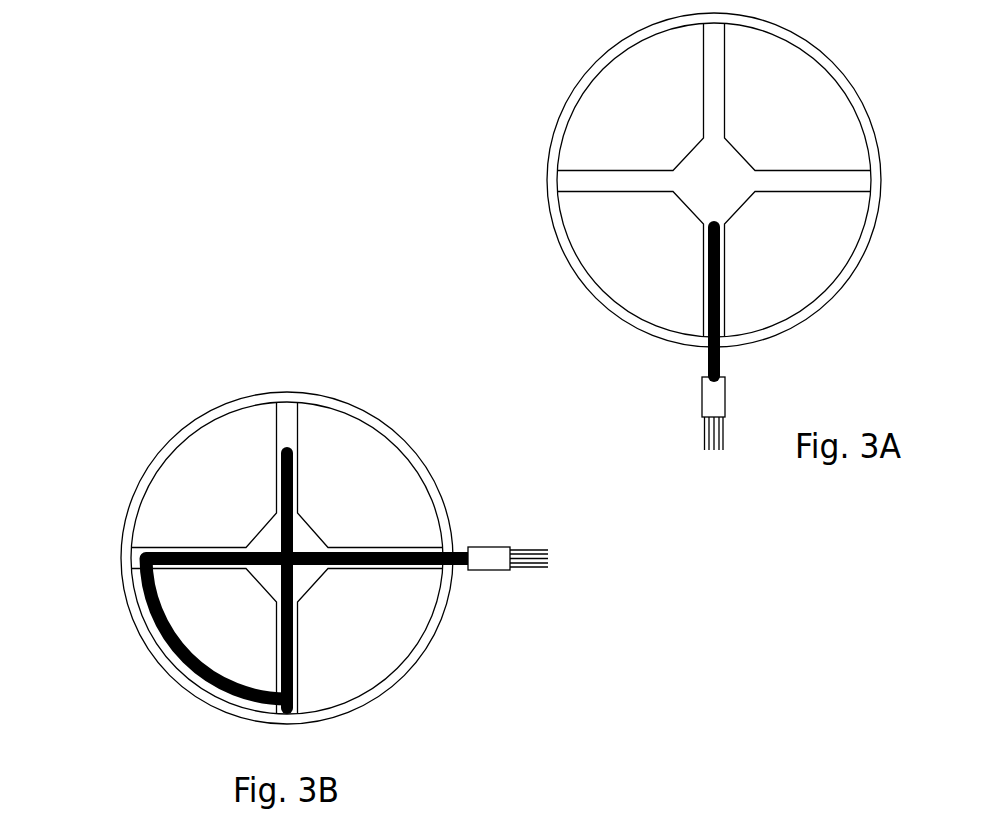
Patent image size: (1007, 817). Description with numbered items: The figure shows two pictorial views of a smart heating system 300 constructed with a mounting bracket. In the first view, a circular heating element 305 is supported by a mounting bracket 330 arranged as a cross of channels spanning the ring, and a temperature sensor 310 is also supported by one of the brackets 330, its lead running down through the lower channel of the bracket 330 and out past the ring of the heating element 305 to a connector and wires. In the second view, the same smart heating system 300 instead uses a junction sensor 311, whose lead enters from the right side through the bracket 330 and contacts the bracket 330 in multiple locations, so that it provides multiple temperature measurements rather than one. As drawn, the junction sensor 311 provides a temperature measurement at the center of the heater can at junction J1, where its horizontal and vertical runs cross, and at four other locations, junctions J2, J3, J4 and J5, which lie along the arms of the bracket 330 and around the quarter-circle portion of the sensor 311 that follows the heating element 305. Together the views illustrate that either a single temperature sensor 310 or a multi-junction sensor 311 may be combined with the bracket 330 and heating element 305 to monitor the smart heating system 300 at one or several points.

In FIG. 3A, the smart heating system 300 is at (521, 72).
In FIG. 3B, the smart heating system 300 is at (137, 387).
In FIG. 3A, the heating element 305 is at (580, 283).
In FIG. 3B, the heating element 305 is at (221, 402).
In FIG. 3A, the temperature sensor 310 is at (722, 352).
In FIG. 3B, the junction sensor 311 is at (470, 572).
In FIG. 3A, the mounting bracket 330 is at (702, 97).
In FIG. 3B, the mounting bracket 330 is at (276, 460).
In FIG. 3B, the junction J1 is at (306, 572).
In FIG. 3B, the junction J2 is at (379, 541).
In FIG. 3B, the junction J3 is at (193, 541).
In FIG. 3B, the junction J4 is at (299, 639).
In FIG. 3B, the junction J5 is at (297, 449).